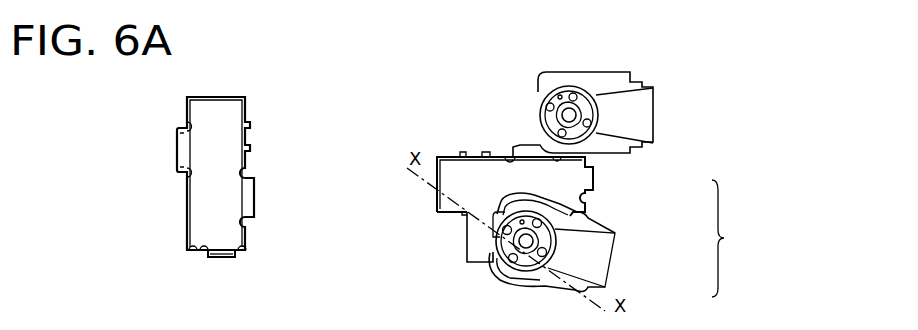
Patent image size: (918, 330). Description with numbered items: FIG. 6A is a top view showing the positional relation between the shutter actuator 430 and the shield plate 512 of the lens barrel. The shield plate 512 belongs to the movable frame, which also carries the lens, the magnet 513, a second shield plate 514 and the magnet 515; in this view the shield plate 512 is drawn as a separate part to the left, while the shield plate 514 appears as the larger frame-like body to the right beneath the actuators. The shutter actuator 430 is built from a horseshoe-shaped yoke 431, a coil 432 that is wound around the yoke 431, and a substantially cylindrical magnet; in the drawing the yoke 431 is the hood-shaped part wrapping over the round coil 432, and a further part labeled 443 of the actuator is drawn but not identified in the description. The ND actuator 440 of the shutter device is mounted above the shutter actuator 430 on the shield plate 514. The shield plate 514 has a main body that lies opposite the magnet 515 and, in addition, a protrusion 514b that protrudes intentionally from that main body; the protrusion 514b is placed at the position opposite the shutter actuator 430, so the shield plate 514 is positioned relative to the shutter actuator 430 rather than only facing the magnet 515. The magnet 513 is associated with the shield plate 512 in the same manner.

The shield plate 512 is at (188, 150).
The magnet 513 is at (188, 247).
The shield plate 514 is at (468, 168).
The magnet 515 is at (438, 212).
The protrusion 514b is at (478, 238).
The ND actuator 440 is at (617, 113).
The shutter actuator 430 is at (631, 239).
The horseshoe-shaped yoke 431 is at (568, 223).
The coil 432 is at (577, 243).
The screw 443 is at (548, 260).